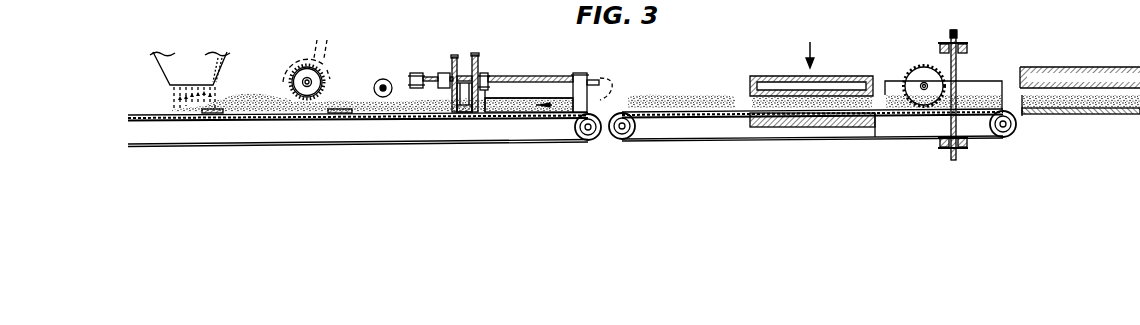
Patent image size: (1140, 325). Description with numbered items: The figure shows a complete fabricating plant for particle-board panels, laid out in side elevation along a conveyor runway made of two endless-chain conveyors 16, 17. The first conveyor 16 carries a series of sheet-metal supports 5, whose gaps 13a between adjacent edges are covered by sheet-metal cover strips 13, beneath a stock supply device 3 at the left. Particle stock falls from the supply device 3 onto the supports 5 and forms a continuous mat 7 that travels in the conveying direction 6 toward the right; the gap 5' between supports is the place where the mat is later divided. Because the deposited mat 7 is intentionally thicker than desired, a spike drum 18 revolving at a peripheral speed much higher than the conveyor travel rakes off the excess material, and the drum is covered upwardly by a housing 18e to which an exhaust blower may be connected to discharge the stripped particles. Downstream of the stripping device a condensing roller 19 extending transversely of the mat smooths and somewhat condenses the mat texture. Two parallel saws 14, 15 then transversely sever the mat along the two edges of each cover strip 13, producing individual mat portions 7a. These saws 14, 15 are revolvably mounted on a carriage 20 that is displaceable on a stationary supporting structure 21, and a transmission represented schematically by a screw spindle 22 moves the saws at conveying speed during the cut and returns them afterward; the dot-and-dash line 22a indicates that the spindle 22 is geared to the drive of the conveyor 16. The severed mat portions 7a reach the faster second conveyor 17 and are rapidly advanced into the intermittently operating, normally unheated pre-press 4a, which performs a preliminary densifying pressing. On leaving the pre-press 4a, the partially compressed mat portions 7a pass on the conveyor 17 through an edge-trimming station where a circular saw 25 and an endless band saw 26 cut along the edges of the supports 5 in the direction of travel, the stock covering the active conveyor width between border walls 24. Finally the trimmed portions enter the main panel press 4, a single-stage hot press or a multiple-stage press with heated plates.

The particle dispensing device 3 is at (158, 58).
The main panel press 4 is at (1083, 70).
The pre-press 4a is at (832, 80).
The sheet-metal supports 5 is at (634, 109).
The gap 5' is at (440, 141).
The conveying direction 6 is at (527, 108).
The mat 7 is at (375, 108).
The mat portion 7a is at (668, 102).
The cover strips 13 is at (215, 113).
The gaps 13a is at (217, 117).
The saw 14 is at (452, 55).
The saw 15 is at (477, 54).
The first conveyor 16 is at (290, 147).
The second conveyor 17 is at (792, 138).
The spike drum 18 is at (322, 73).
The housing 18e is at (313, 48).
The condensing roller 19 is at (383, 79).
The carriage 20 is at (488, 74).
The stationary supporting structure 21 is at (411, 73).
The screw spindle 22 is at (528, 77).
The dot-and-dash line 22a is at (605, 100).
The border walls 24 is at (980, 82).
The circular saw 25 is at (908, 73).
The endless band saw 26 is at (957, 35).